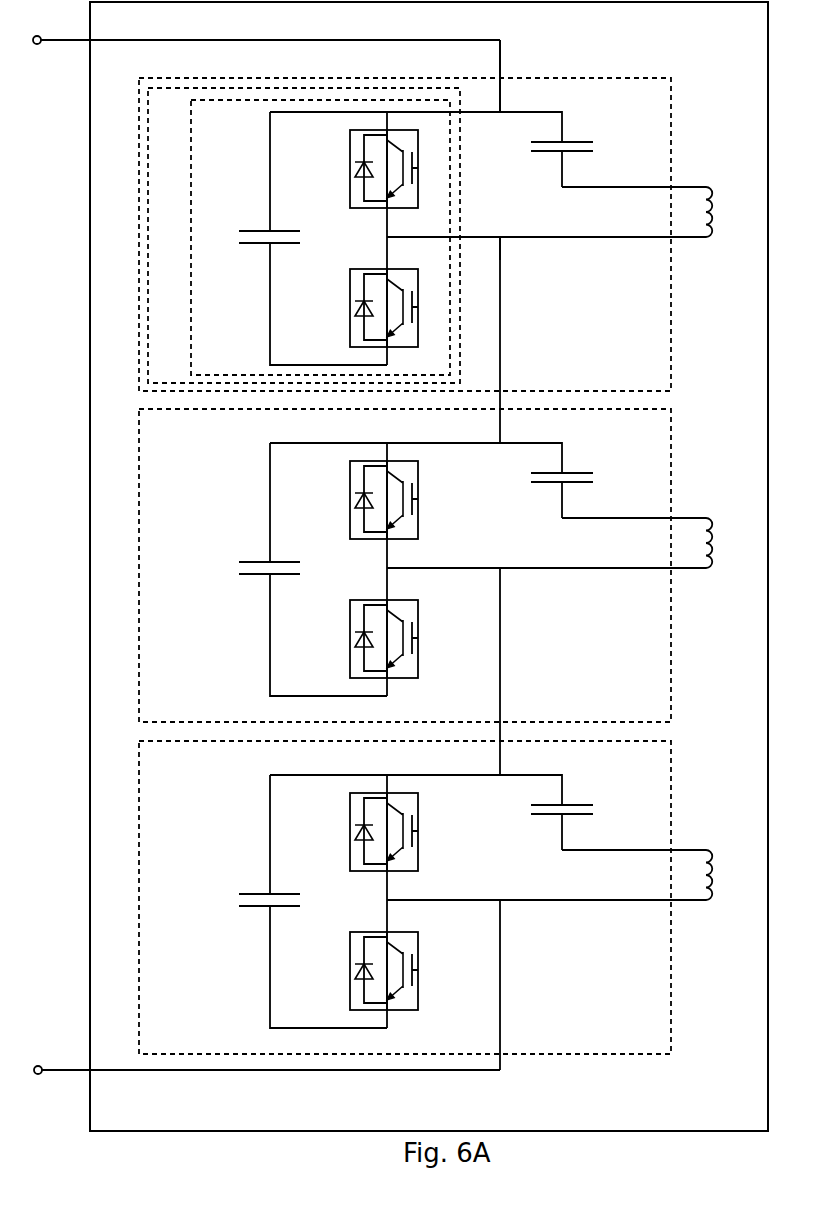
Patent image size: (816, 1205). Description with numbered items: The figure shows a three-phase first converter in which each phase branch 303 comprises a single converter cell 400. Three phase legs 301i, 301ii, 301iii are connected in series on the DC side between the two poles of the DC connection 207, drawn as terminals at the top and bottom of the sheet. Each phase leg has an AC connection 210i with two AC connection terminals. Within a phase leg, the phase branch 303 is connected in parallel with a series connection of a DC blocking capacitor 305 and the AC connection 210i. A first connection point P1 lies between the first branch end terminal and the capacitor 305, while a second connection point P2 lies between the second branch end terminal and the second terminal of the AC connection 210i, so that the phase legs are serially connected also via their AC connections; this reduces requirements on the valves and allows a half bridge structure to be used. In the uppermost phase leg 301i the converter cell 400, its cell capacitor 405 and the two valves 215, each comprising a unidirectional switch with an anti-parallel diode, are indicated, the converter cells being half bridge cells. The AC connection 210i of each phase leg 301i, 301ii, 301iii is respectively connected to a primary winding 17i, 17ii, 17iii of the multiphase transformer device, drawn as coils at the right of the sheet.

The DC connection 207 is at (60, 40).
The first connection point P1 is at (500, 110).
The second connection point P2 is at (500, 237).
The DC blocking capacitor 305 is at (607, 122).
The cell capacitor 405 is at (258, 231).
The valves 215 is at (350, 312).
The phase branch 303 is at (304, 235).
The converter cell 400 is at (320, 237).
The first phase leg 301i is at (405, 234).
The second phase leg 301ii is at (405, 565).
The third phase leg 301iii is at (405, 897).
The AC connection 210i is at (590, 187).
The primary winding 17i is at (706, 188).
The primary winding 17ii is at (706, 519).
The primary winding 17iii is at (706, 851).